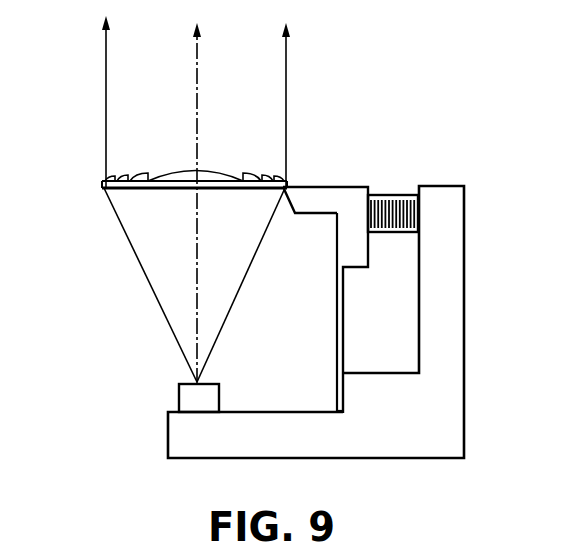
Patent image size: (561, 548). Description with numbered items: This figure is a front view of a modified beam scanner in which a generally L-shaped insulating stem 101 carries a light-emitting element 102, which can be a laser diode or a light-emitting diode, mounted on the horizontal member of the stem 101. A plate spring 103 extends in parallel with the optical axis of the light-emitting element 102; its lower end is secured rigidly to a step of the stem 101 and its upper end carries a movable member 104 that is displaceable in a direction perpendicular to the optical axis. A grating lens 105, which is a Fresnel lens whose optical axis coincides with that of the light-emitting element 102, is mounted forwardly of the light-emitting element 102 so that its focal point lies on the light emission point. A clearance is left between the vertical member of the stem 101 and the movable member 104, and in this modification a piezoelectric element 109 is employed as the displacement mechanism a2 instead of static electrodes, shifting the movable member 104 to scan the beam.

The insulating stem 101 is at (453, 396).
The light-emitting element 102 is at (180, 398).
The plate spring 103 is at (337, 333).
The movable member 104 is at (321, 186).
The grating lens 105 is at (102, 184).
The piezoelectric element 109 is at (402, 195).
The displacement mechanism a2 is at (383, 186).